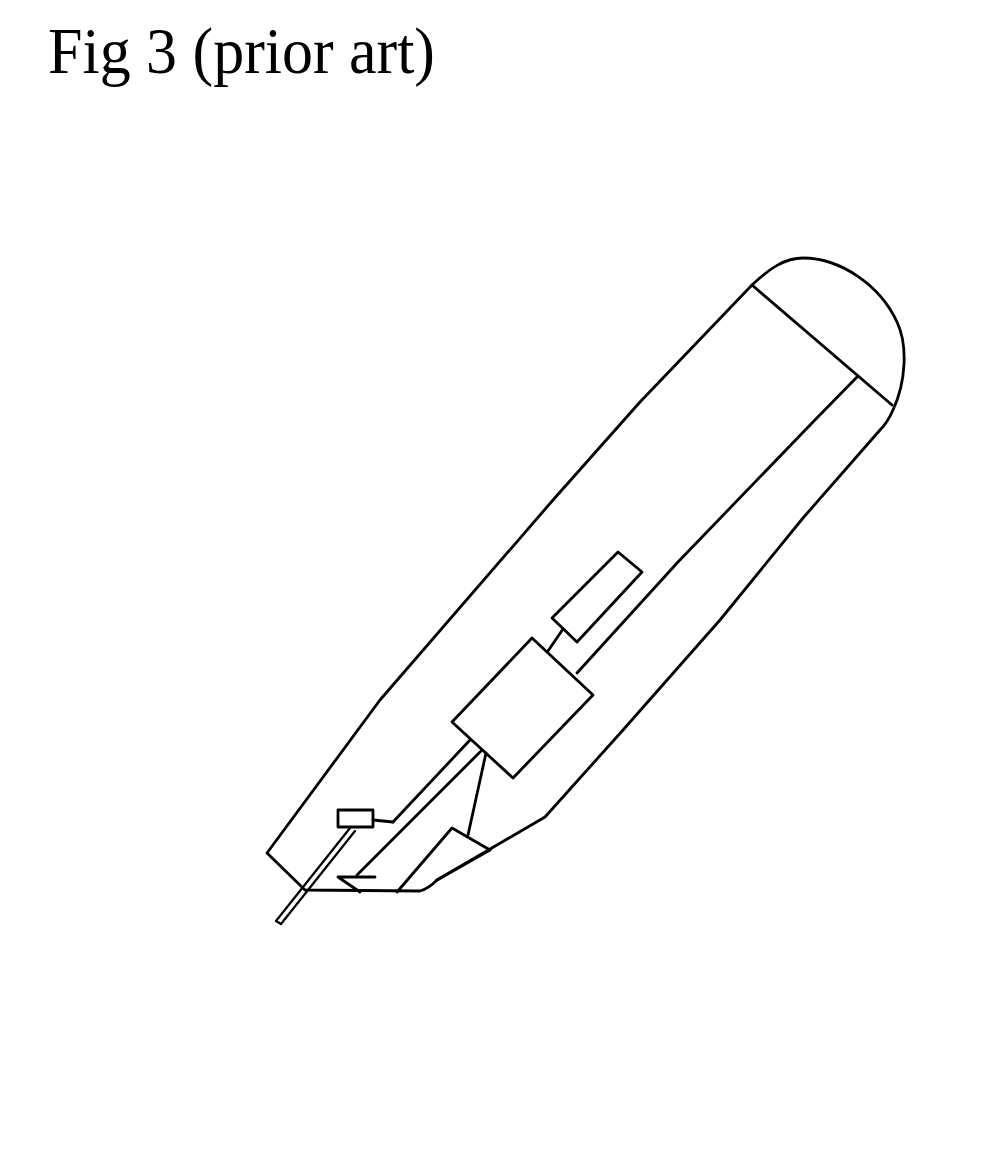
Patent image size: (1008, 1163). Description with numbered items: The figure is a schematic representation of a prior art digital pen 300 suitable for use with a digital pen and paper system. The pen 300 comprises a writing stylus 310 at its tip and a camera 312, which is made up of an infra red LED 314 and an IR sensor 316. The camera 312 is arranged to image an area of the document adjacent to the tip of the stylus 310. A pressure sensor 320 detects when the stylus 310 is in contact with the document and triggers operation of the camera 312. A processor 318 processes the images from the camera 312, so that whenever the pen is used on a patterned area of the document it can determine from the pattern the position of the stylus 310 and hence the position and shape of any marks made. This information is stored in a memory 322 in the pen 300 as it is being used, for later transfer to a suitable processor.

The pen 300 is at (627, 420).
The writing stylus 310 is at (293, 898).
The camera 312 is at (483, 870).
The infra red LED 314 is at (437, 880).
The IR sensor 316 is at (362, 893).
The processor 318 is at (545, 707).
The pressure sensor 320 is at (338, 810).
The memory 322 is at (593, 570).